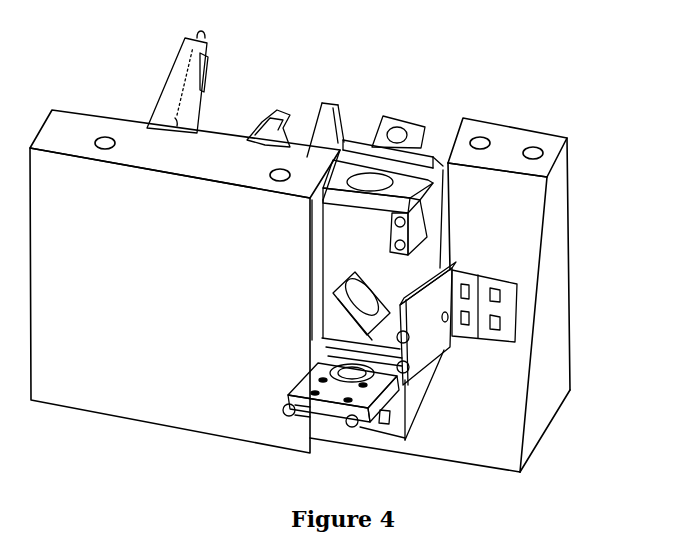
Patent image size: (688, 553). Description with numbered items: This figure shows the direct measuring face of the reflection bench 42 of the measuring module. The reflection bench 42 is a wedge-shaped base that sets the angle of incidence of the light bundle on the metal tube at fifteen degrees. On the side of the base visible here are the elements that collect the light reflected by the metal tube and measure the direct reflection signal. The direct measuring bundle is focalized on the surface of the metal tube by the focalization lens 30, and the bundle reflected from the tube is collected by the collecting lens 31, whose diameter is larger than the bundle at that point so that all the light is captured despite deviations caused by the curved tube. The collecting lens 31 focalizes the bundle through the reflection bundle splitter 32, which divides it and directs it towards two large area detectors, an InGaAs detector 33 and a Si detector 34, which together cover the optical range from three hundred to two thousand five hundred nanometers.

The focalization lens for the reflection channel 30 is at (397, 118).
The collecting lens for the direct measuring of the reflection channel 31 is at (382, 168).
The reflection bundle splitter for direct measuring 32 is at (333, 293).
The InGaAs detector for the direct measuring of the reflection channel 33 is at (455, 310).
The Si detector for the direct measuring of the reflection channel 34 is at (378, 382).
The reflection bench 42 is at (140, 388).